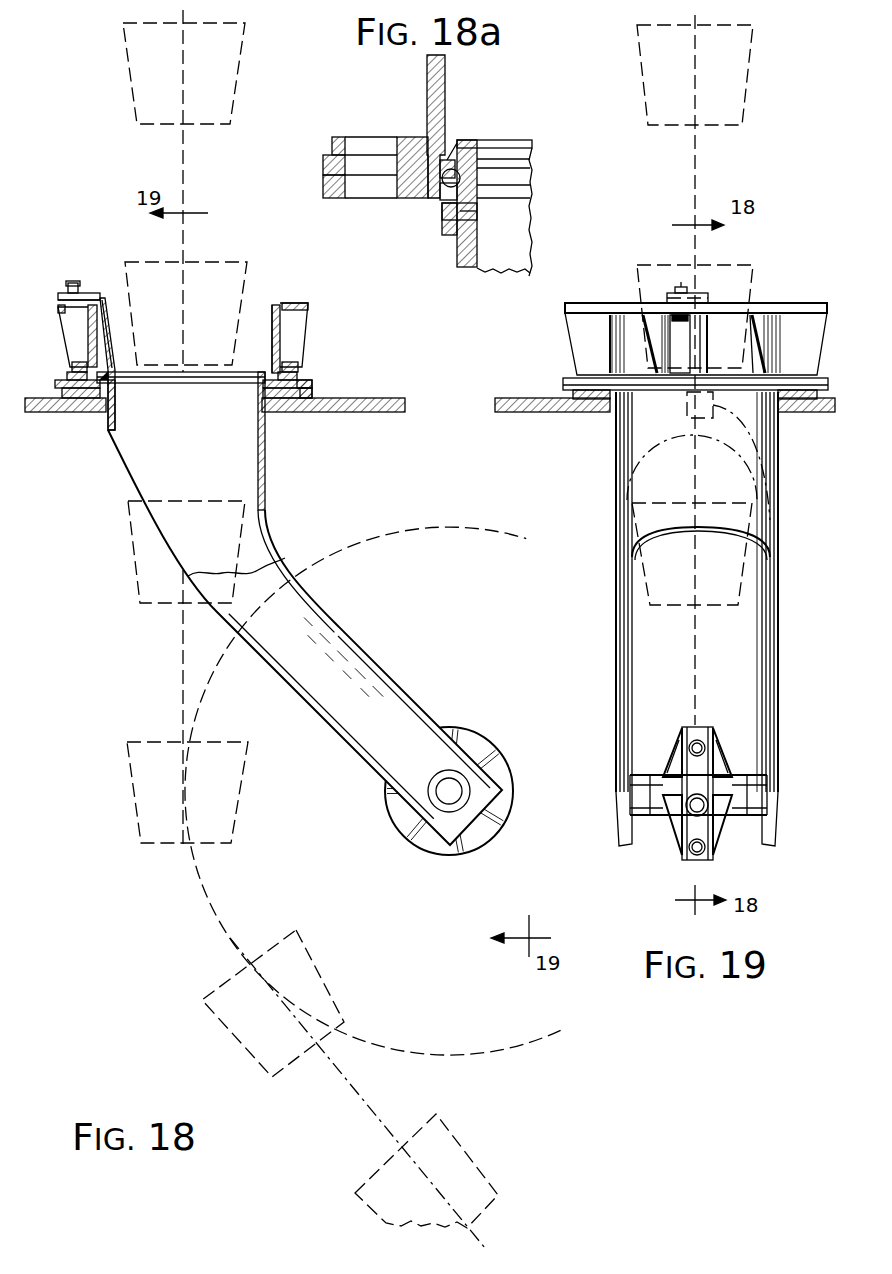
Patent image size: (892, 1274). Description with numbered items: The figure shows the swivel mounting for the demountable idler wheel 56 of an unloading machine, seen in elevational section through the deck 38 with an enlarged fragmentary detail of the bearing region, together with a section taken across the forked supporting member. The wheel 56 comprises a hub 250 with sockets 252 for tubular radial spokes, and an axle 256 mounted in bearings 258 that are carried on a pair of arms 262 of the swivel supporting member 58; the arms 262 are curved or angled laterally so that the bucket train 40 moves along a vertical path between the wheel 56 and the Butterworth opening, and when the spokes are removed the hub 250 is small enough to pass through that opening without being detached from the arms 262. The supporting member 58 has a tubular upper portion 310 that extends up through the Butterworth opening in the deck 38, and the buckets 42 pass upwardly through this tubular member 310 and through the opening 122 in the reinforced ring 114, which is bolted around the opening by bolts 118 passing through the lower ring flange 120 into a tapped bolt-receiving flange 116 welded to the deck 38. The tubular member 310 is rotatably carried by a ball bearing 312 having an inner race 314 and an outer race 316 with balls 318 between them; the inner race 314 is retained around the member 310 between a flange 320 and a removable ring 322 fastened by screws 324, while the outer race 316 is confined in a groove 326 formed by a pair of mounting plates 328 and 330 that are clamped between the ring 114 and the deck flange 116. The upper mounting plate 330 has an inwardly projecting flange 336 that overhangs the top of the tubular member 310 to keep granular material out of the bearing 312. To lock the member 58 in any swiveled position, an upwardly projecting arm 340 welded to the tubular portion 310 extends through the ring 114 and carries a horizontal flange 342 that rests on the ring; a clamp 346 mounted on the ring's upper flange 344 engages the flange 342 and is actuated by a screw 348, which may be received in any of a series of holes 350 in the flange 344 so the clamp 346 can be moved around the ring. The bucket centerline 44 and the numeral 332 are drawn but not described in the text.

In FIG. 18, the deck 38 is at (61, 412).
In FIG. 19, the deck 38 is at (521, 413).
In FIG. 18, the bucket train 40 is at (98, 527).
In FIG. 18, the buckets 42 is at (130, 83).
In FIG. 19, the buckets 42 is at (748, 85).
In FIG. 18, the bucket path centerline 44 is at (182, 645).
In FIG. 19, the bucket path centerline 44 is at (698, 180).
In FIG. 18, the demountable wheel 56 is at (170, 881).
In FIG. 18, the swivel supporting member 58 is at (278, 506).
In FIG. 19, the swivel supporting member 58 is at (615, 490).
In FIG. 18, the reinforced ring 114 is at (54, 311).
In FIG. 18a, the reinforced ring 114 is at (426, 70).
In FIG. 19, the reinforced ring 114 is at (571, 340).
In FIG. 18, the bolt-receiving flange 116 is at (63, 392).
In FIG. 19, the bolt-receiving flange 116 is at (580, 396).
In FIG. 18, the bolts 118 is at (77, 376).
In FIG. 18, the flange 120 is at (68, 377).
In FIG. 18a, the flange 120 is at (340, 137).
In FIG. 18, the opening 122 is at (273, 330).
In FIG. 18, the hub 250 is at (401, 831).
In FIG. 19, the hub 250 is at (713, 830).
In FIG. 19, the sockets 252 is at (698, 735).
In FIG. 18, the axle 256 is at (443, 787).
In FIG. 19, the bearings 258 is at (661, 775).
In FIG. 18, the arms 262 is at (340, 633).
In FIG. 19, the arms 262 is at (619, 636).
In FIG. 18, the tubular upper portion 310 is at (267, 430).
In FIG. 18a, the tubular upper portion 310 is at (468, 268).
In FIG. 19, the tubular upper portion 310 is at (627, 425).
In FIG. 18a, the bearing 312 is at (480, 156).
In FIG. 18a, the inner race 314 is at (480, 182).
In FIG. 18a, the outer race 316 is at (444, 200).
In FIG. 18a, the balls 318 is at (480, 166).
In FIG. 18a, the flange 320 is at (482, 145).
In FIG. 18a, the removable ring 322 is at (453, 235).
In FIG. 18a, the screws 324 is at (480, 198).
In FIG. 18a, the groove 326 is at (440, 192).
In FIG. 18, the mounting plate 328 is at (313, 393).
In FIG. 18a, the mounting plate 328 is at (323, 190).
In FIG. 18, the upper mounting plate 330 is at (313, 380).
In FIG. 18a, the upper mounting plate 330 is at (323, 165).
In FIG. 18a, the flange 332 is at (405, 198).
In FIG. 18a, the inwardly projecting flange 336 is at (455, 170).
In FIG. 18, the arm 340 is at (110, 320).
In FIG. 19, the arm 340 is at (763, 425).
In FIG. 18, the horizontal flange 342 is at (102, 297).
In FIG. 19, the horizontal flange 342 is at (710, 303).
In FIG. 18, the flange 344 is at (54, 300).
In FIG. 19, the flange 344 is at (565, 309).
In FIG. 18, the clamp 346 is at (86, 293).
In FIG. 19, the clamp 346 is at (702, 293).
In FIG. 18, the screw 348 is at (74, 282).
In FIG. 19, the screw 348 is at (681, 285).
In FIG. 18, the holes 350 is at (290, 305).